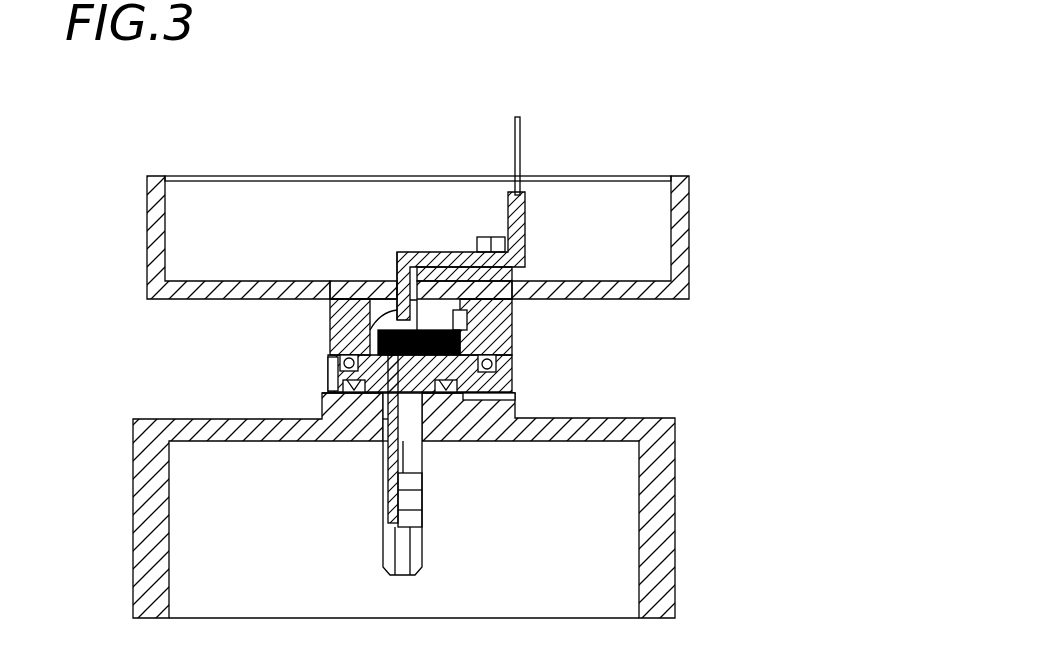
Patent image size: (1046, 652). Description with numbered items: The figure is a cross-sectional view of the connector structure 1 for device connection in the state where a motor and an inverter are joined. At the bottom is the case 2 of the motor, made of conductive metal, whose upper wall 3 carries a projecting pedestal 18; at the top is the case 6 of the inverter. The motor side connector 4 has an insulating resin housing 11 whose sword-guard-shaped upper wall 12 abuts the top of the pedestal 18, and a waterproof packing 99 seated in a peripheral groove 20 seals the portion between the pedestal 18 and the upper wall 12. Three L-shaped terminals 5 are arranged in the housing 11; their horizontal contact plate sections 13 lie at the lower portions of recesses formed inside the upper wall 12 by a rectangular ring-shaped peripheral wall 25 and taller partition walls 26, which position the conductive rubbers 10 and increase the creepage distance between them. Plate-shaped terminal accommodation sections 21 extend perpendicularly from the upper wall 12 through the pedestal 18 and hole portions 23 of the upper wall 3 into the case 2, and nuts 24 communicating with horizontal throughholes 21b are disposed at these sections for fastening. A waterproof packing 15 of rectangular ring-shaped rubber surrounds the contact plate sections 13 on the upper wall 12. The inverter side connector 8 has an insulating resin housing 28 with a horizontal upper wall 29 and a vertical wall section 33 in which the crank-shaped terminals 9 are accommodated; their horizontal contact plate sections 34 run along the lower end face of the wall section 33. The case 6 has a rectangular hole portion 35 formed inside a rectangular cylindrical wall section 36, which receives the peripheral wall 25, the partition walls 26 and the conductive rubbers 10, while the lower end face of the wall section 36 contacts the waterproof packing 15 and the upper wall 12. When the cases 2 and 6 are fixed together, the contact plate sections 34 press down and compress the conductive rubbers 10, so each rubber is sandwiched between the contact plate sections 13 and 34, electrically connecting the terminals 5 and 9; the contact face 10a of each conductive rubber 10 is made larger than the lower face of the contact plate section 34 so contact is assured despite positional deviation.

The connector structure for device connection 1 is at (656, 128).
The case 2 is at (678, 500).
The upper wall 3 is at (560, 425).
The motor side connector 4 is at (515, 366).
The terminals 5 is at (385, 445).
The case 6 is at (692, 245).
The inverter side connector 8 is at (545, 242).
The terminals 9 is at (520, 160).
The conductive rubber 10 is at (378, 342).
The contact face 10a is at (365, 290).
The housing 11 is at (312, 365).
The upper wall 12 is at (492, 372).
The contact plate sections 13 is at (383, 440).
The waterproof packing 15 is at (330, 368).
The pedestal 18 is at (456, 407).
The peripheral groove 20 is at (333, 380).
The terminal accommodation sections 21 is at (422, 555).
The horizontal throughholes 21b is at (418, 496).
The hole portions 23 is at (430, 440).
The nuts 24 is at (400, 497).
The peripheral wall 25 is at (478, 336).
The partition walls 26 is at (500, 328).
The housing 28 is at (397, 250).
The upper wall 29 is at (442, 265).
The wall section 33 is at (385, 318).
The contact plate sections 34 is at (510, 300).
The hole portion 35 is at (395, 330).
The wall section 36 is at (345, 315).
The waterproof packing 99 is at (383, 425).